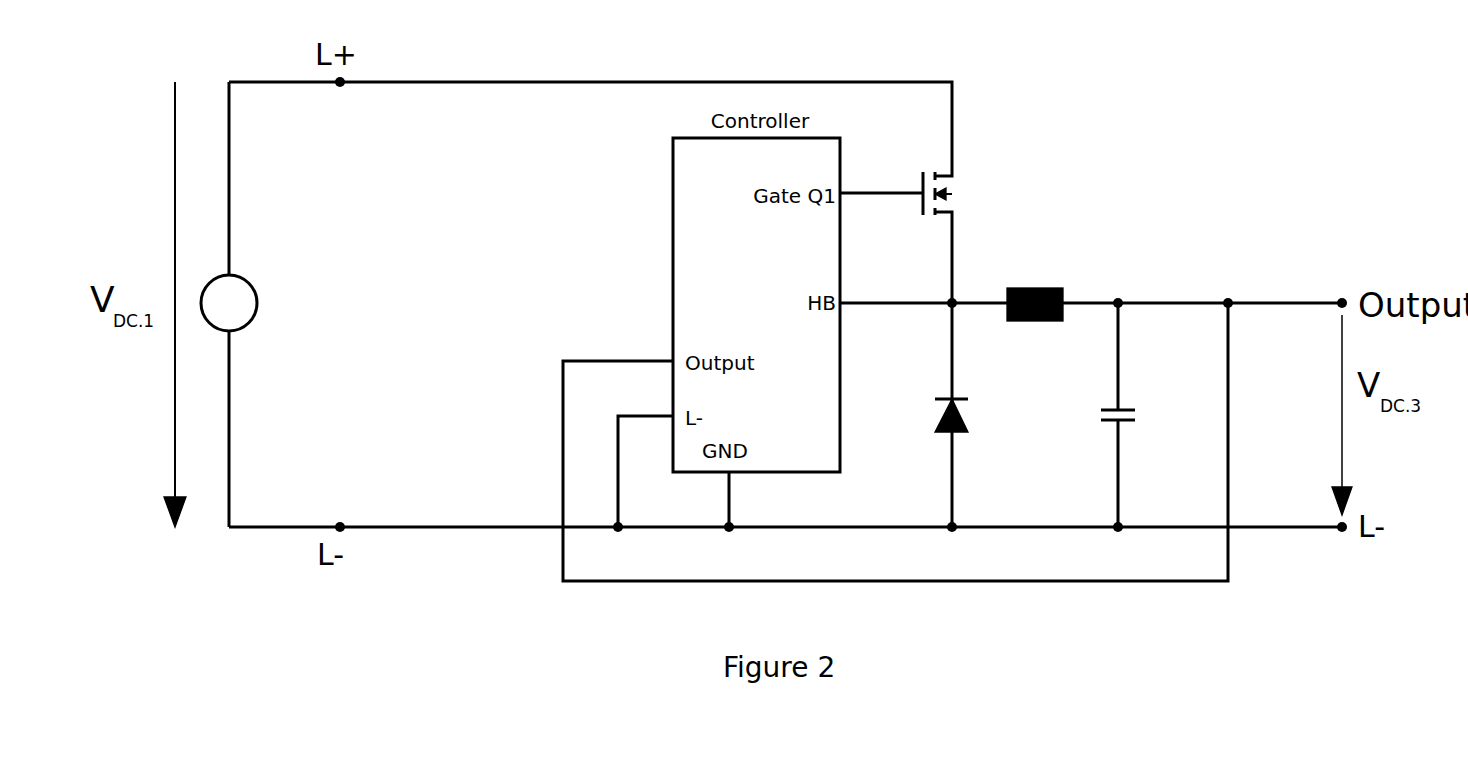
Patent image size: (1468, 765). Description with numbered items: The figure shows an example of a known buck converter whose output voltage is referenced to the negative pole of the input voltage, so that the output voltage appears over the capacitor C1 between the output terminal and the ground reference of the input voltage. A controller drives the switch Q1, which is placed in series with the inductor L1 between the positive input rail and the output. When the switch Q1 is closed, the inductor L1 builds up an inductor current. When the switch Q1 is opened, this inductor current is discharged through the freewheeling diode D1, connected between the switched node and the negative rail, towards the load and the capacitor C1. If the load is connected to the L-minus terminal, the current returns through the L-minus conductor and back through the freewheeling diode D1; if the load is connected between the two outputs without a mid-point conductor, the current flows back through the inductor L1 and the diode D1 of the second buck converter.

The switch Q1 is at (968, 223).
The freewheeling diode D1 is at (978, 415).
The inductor L1 is at (1035, 281).
The capacitor C1 is at (1138, 392).